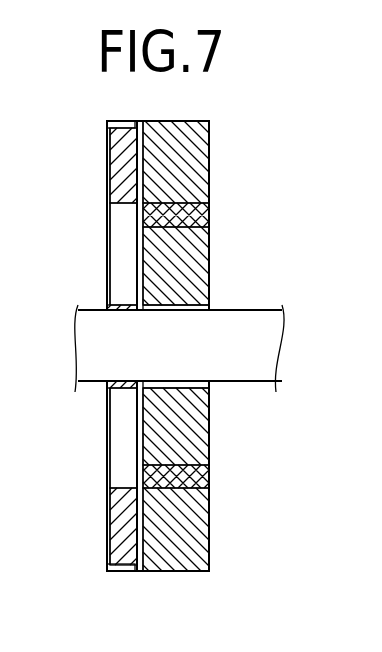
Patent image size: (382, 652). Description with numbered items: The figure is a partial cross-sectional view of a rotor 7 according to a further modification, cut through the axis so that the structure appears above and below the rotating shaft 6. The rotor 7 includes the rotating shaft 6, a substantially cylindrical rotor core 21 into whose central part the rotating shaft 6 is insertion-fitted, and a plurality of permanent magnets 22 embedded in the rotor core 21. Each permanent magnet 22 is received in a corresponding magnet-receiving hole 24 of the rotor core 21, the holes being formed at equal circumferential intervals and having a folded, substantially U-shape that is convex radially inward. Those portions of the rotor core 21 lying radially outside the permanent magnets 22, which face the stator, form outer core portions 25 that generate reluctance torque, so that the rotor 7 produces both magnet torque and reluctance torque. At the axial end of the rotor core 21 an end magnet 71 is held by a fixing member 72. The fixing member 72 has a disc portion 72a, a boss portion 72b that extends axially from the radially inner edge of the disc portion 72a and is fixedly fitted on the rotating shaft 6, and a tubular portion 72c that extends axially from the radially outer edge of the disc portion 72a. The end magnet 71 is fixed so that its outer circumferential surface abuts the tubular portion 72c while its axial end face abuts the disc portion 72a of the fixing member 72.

The rotating shaft 6 is at (272, 340).
The rotor 7 is at (212, 150).
The rotor core 21 is at (182, 277).
The permanent magnet 22 is at (178, 226).
The magnet-receiving hole 24 is at (196, 215).
The outer core portion 25 is at (182, 183).
The end magnet 71 is at (124, 162).
The fixing member 72 is at (132, 233).
The disc portion 72a is at (133, 255).
The boss portion 72b is at (123, 305).
The tubular portion 72c is at (108, 125).